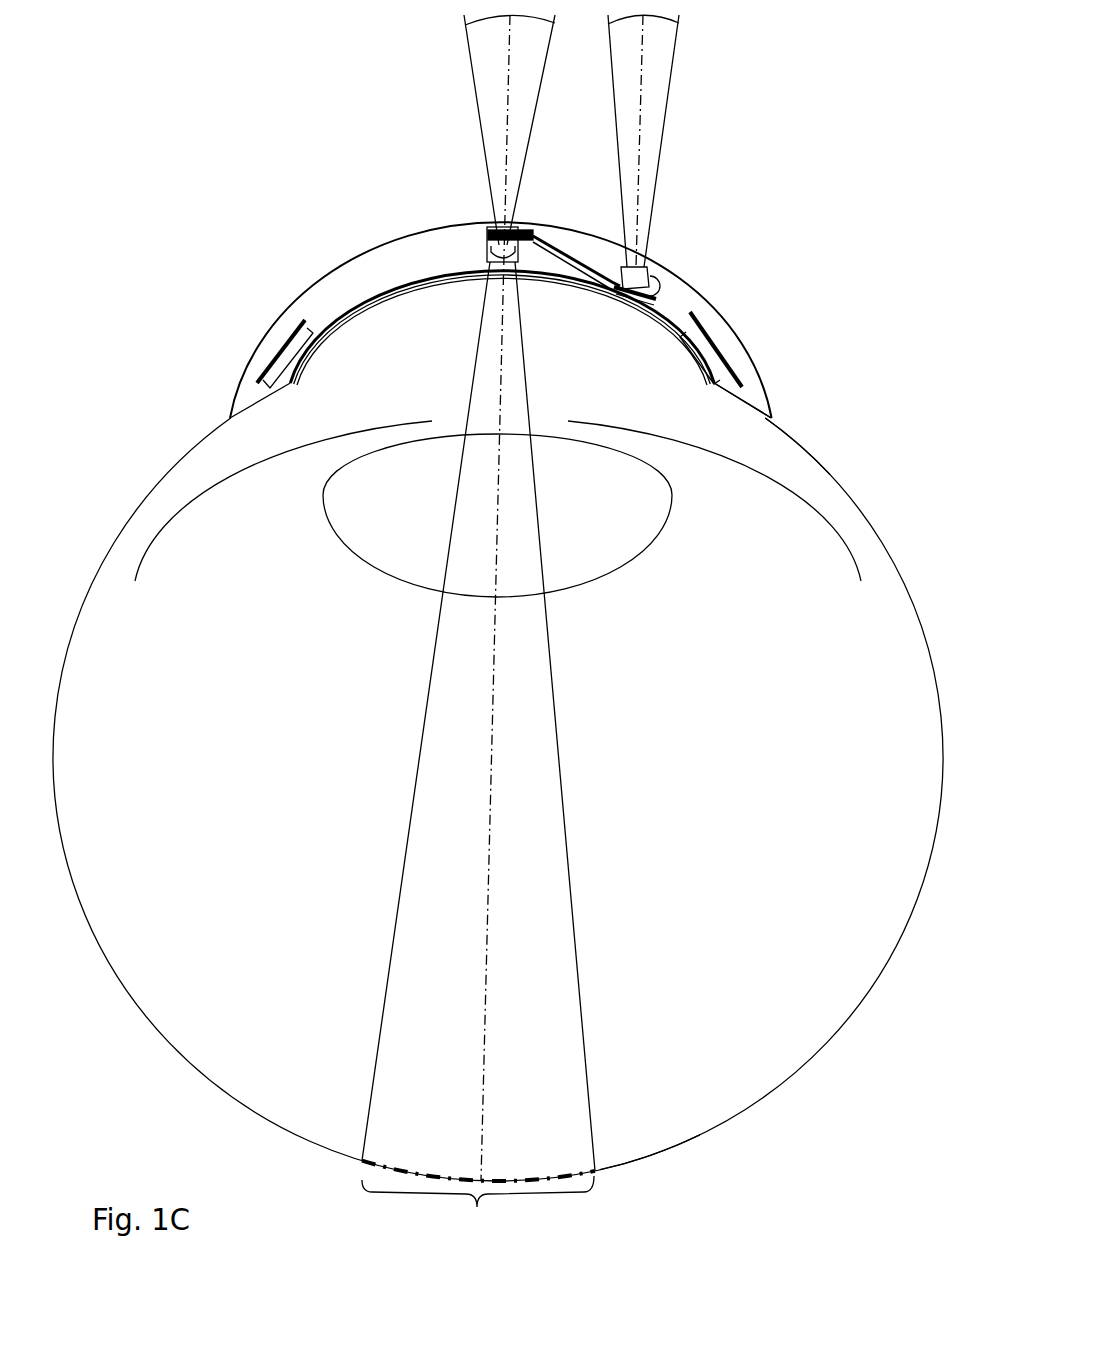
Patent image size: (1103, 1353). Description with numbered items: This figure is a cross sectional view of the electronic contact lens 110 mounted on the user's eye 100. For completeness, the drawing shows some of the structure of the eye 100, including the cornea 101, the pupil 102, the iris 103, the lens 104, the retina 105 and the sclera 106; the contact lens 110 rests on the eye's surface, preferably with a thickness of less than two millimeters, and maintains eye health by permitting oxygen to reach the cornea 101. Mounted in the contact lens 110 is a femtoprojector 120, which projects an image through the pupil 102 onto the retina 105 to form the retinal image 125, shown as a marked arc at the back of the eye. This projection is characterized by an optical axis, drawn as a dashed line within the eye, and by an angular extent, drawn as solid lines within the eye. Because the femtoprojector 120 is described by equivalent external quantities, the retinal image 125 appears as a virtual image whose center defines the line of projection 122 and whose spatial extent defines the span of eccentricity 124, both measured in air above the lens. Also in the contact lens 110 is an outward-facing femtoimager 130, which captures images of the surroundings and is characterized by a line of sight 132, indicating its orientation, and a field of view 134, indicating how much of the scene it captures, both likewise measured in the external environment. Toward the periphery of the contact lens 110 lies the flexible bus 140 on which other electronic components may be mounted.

The eye 100 is at (752, 667).
The cornea 101 is at (470, 344).
The pupil 102 is at (543, 405).
The iris 103 is at (432, 420).
The lens 104 is at (435, 507).
The retina 105 is at (648, 1162).
The sclera 106 is at (731, 401).
The electronic contact lens 110 is at (224, 390).
The femtoprojector 120 is at (485, 262).
The line of projection 122 is at (503, 150).
The span of eccentricity 124 is at (404, 593).
The retinal image 125 is at (478, 1199).
The femtoimager 130 is at (662, 286).
The line of sight 132 is at (638, 163).
The field of view 134 is at (730, 141).
The flexible bus 140 is at (724, 362).